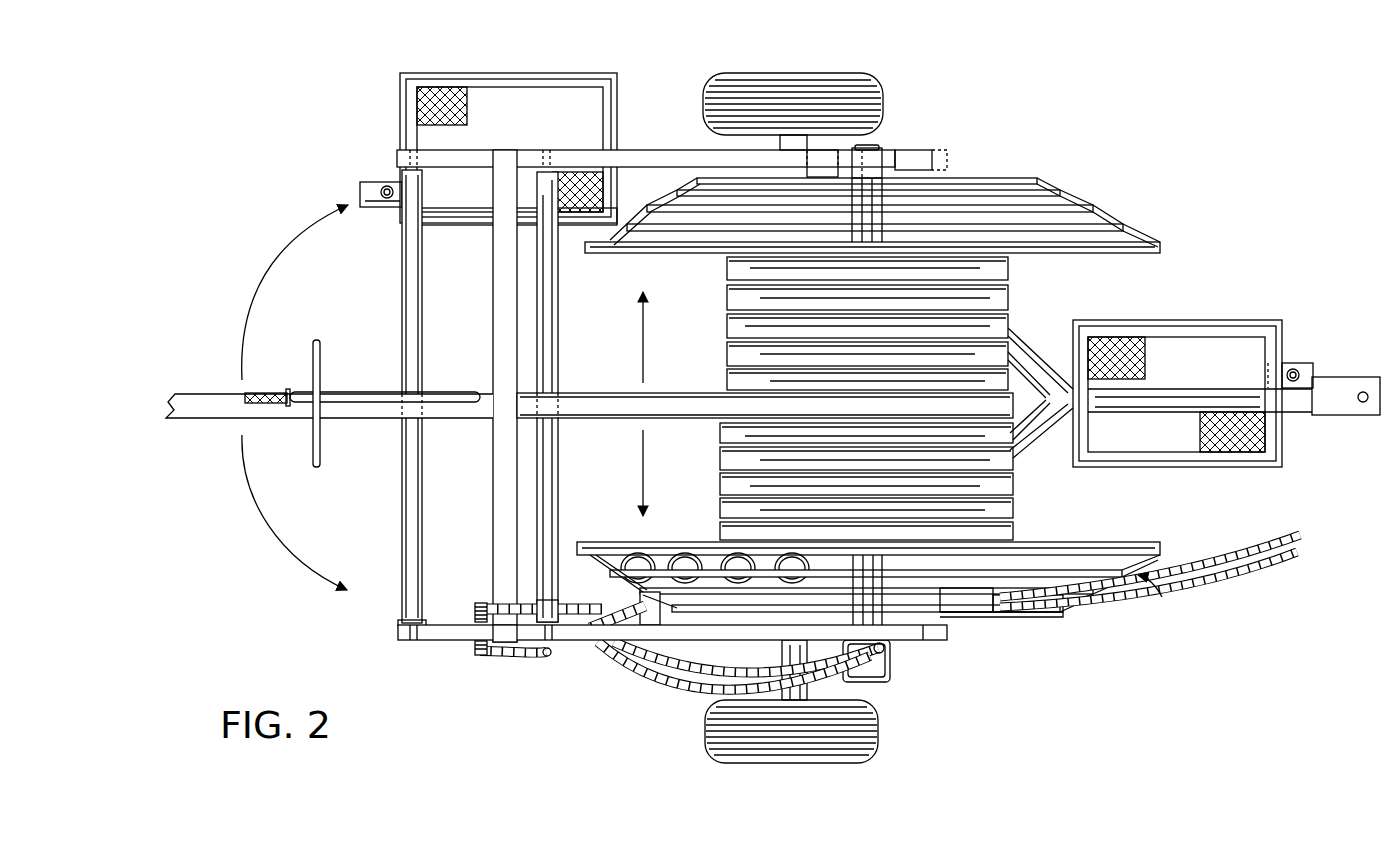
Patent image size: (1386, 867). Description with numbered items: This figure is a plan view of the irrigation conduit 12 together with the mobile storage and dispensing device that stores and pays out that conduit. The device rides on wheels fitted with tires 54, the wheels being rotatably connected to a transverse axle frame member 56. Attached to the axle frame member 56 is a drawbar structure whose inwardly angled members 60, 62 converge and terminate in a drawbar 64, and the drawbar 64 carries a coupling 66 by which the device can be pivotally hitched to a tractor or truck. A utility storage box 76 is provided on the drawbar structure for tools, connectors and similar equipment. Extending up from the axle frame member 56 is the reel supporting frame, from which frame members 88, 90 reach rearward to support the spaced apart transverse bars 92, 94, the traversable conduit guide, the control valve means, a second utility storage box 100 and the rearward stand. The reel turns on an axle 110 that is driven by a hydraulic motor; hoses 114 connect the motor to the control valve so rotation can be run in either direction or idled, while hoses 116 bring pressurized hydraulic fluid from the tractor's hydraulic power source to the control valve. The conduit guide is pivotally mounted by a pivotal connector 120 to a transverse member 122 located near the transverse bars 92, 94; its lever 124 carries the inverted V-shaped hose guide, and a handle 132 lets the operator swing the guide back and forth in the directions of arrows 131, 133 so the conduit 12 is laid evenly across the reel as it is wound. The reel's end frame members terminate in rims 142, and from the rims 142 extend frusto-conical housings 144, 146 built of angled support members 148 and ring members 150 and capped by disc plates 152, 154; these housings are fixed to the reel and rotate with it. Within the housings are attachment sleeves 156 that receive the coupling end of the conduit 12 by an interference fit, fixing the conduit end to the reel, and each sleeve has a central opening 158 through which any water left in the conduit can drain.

The irrigation conduit 12 is at (194, 420).
The tires 54 is at (878, 738).
The transverse axle frame member 56 is at (810, 684).
The inwardly angled member 60 is at (1019, 452).
The inwardly angled member 62 is at (1018, 346).
The drawbar 64 is at (1296, 412).
The coupling 66 is at (1362, 377).
The utility storage box 76 is at (1190, 468).
The frame member 88 is at (603, 641).
The frame member 90 is at (655, 152).
The transverse bar 92 is at (400, 614).
The transverse bar 94 is at (552, 614).
The utility storage box 100 is at (404, 118).
The axle 110 is at (950, 160).
The hoses 114 is at (676, 688).
The hoses 116 is at (1252, 572).
The pivotal connector 120 is at (478, 418).
The transverse member 122 is at (482, 614).
The lever 124 is at (395, 392).
The arrow 131 is at (644, 342).
The handle 132 is at (270, 406).
The arrow 133 is at (644, 460).
The rims 142 is at (1162, 250).
The frusto-conical housing 144 is at (903, 392).
The frusto-conical housing 146 is at (1170, 594).
The angled support members 148 is at (1128, 233).
The ring members 150 is at (1047, 190).
The disc plate 152 is at (1003, 178).
The disc plate 154 is at (1015, 618).
The attachment sleeves 156 is at (658, 650).
The central opening 158 is at (640, 560).